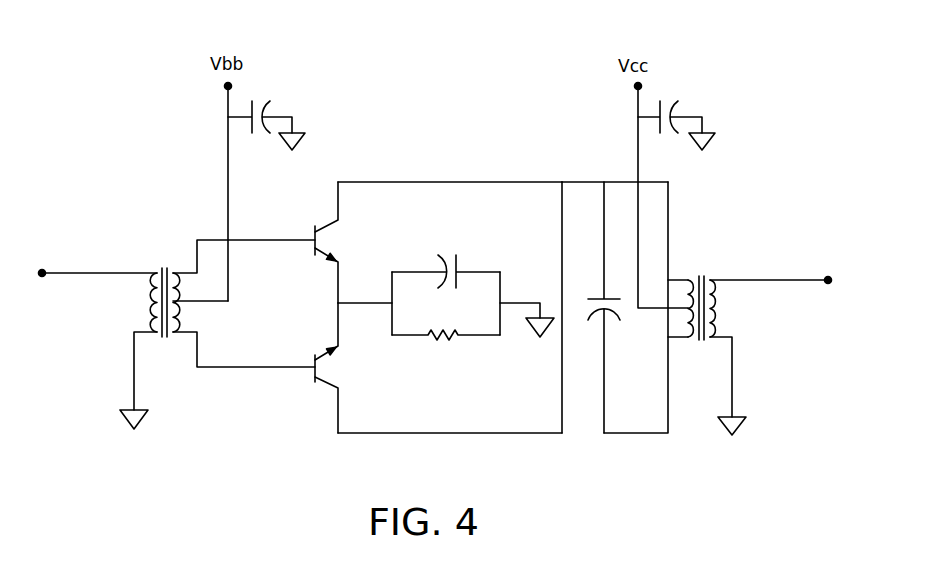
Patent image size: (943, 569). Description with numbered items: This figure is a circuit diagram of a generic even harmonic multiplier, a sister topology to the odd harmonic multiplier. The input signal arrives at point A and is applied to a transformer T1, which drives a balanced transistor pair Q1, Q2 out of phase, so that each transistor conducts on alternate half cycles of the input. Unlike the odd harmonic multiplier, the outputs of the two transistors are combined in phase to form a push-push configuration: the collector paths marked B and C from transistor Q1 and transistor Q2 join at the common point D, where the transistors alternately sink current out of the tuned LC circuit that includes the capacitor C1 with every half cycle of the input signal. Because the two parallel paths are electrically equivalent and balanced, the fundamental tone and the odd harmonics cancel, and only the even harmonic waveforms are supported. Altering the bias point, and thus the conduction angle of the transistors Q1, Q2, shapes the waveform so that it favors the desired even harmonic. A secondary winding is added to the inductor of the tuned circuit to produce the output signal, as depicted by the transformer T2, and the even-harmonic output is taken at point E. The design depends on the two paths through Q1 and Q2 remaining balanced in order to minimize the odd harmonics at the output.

The RF input signal point A is at (137, 288).
The Q1 collector rail signal point B is at (383, 163).
The Q2 collector rail signal point C is at (438, 416).
The output rail signal point D is at (558, 163).
The RF output (even) signal point E is at (742, 292).
The transistor Q1 is at (339, 242).
The transistor Q2 is at (339, 368).
The transformer T1 is at (217, 334).
The secondary winding T2 is at (707, 355).
The capacitor C1 is at (594, 307).